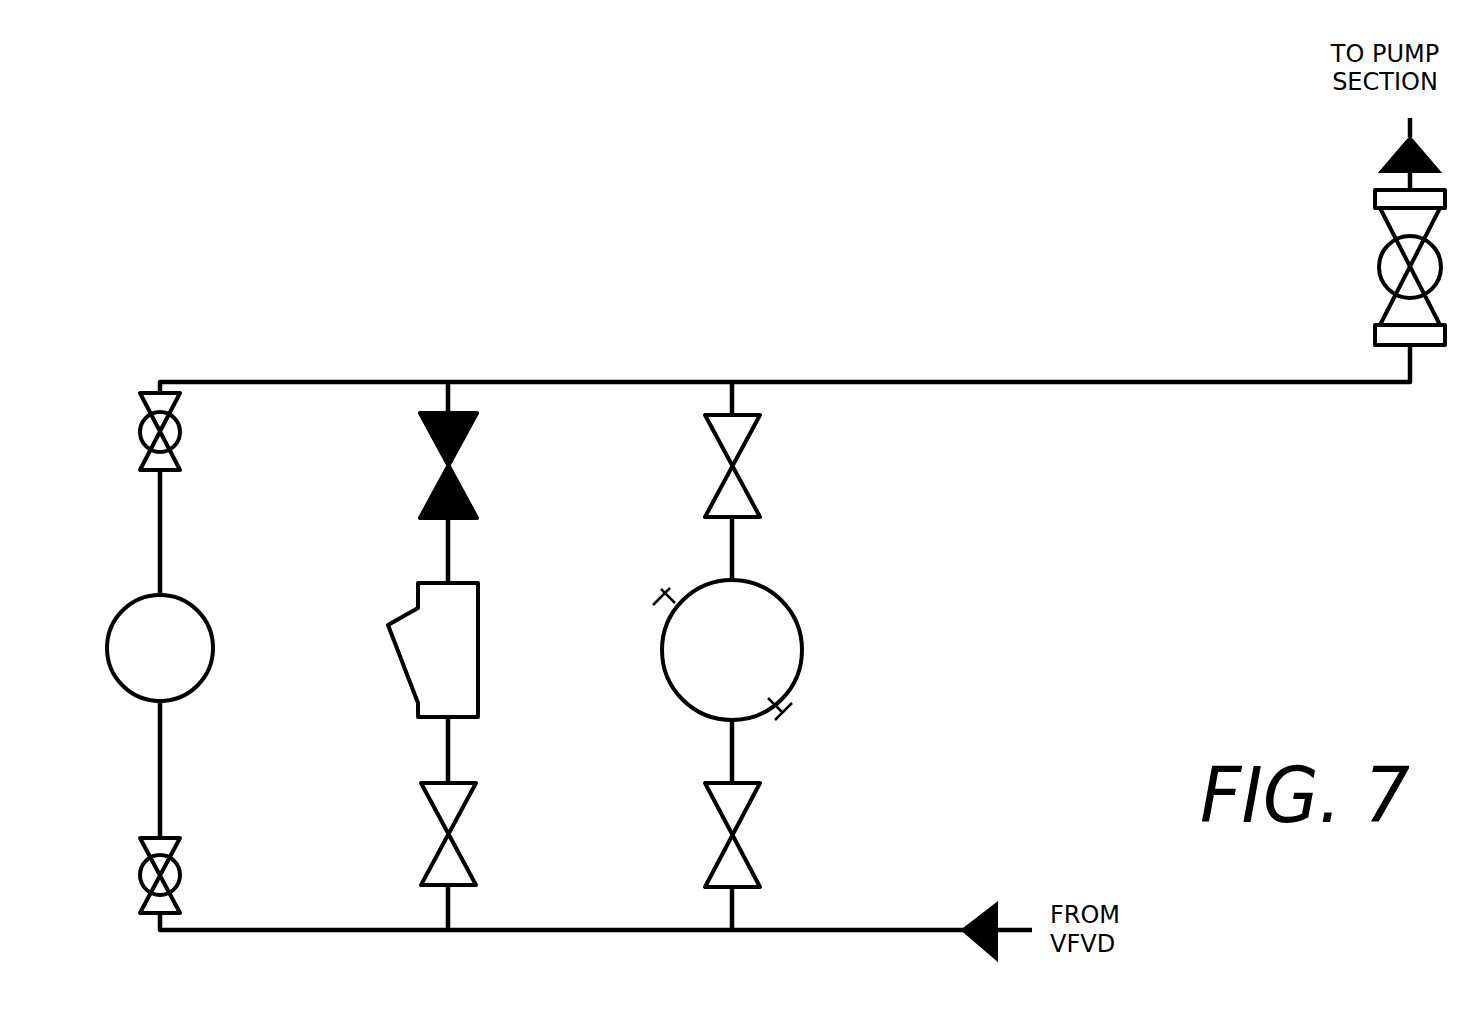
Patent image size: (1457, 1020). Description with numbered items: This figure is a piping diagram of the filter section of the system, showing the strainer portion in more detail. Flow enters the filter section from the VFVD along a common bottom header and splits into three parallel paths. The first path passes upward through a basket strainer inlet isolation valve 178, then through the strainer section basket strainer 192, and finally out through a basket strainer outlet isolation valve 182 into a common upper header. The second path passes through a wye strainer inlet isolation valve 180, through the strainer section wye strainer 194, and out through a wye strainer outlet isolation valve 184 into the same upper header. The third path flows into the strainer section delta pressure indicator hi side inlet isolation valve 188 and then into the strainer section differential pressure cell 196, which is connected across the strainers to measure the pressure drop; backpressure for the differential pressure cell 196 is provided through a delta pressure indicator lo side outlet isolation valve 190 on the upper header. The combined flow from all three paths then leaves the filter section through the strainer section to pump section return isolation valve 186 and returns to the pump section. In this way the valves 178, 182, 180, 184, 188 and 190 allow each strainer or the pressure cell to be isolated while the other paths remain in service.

The basket strainer inlet isolation valve 178 is at (770, 835).
The wye strainer inlet isolation valve 180 is at (467, 835).
The basket strainer outlet isolation valve 182 is at (755, 470).
The wye strainer outlet isolation valve 184 is at (472, 468).
The strainer section to pump section return isolation valve 186 is at (1368, 270).
The strainer section delta pressure indicator hi side inlet isolation valve 188 is at (185, 875).
The delta pressure indicator lo side outlet isolation valve 190 is at (188, 432).
The strainer section basket strainer 192 is at (818, 652).
The strainer section wye strainer 194 is at (490, 655).
The strainer section differential pressure cell 196 is at (220, 653).